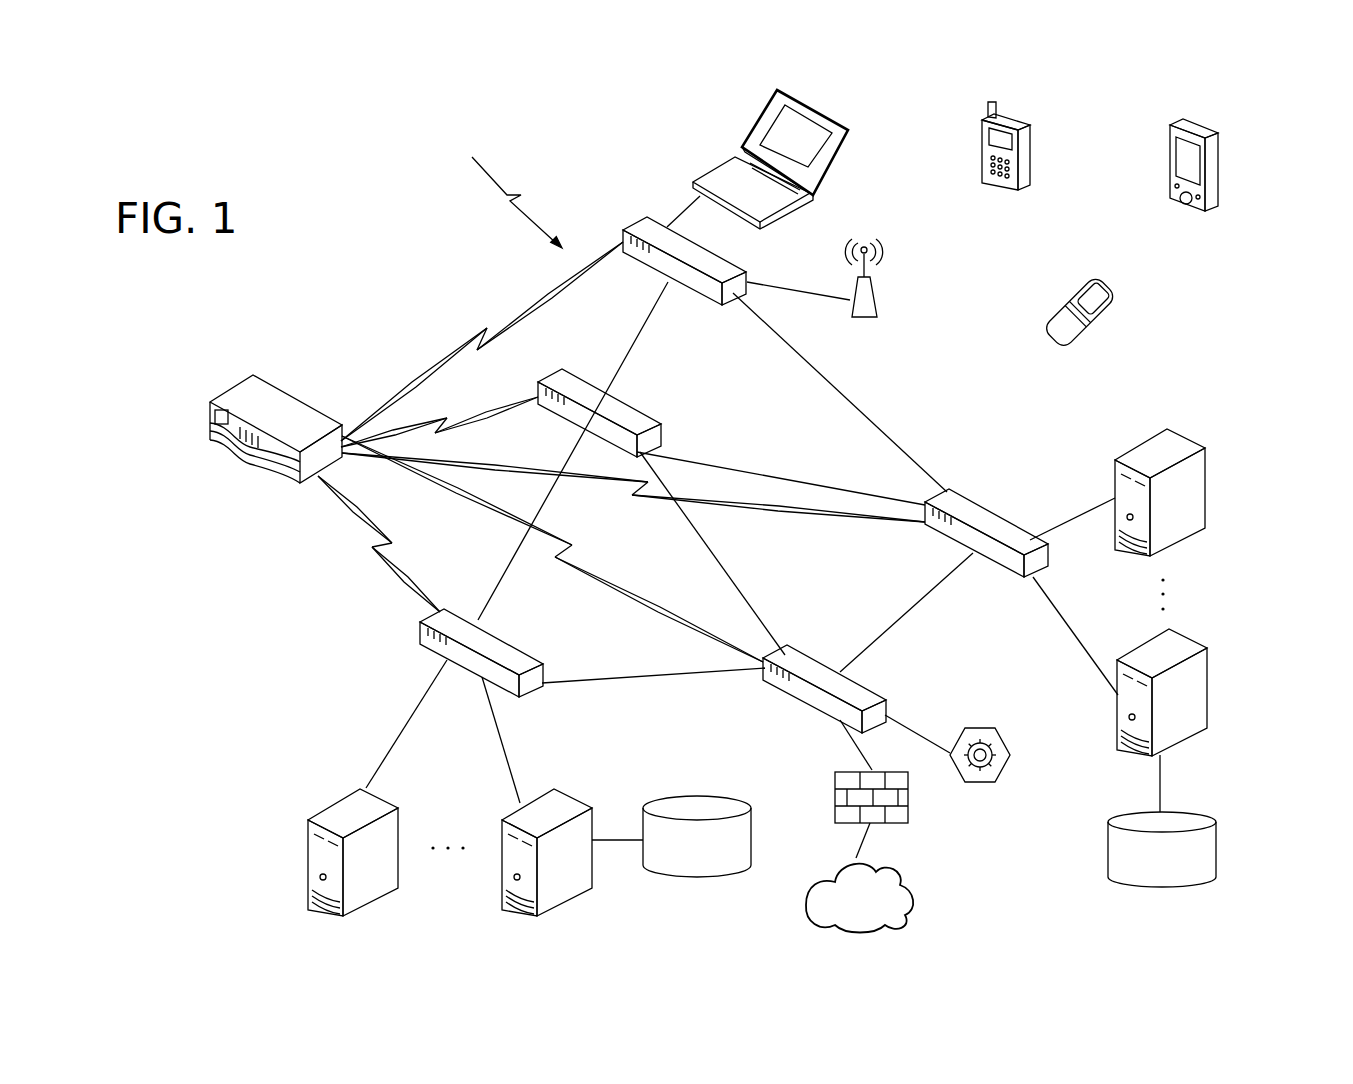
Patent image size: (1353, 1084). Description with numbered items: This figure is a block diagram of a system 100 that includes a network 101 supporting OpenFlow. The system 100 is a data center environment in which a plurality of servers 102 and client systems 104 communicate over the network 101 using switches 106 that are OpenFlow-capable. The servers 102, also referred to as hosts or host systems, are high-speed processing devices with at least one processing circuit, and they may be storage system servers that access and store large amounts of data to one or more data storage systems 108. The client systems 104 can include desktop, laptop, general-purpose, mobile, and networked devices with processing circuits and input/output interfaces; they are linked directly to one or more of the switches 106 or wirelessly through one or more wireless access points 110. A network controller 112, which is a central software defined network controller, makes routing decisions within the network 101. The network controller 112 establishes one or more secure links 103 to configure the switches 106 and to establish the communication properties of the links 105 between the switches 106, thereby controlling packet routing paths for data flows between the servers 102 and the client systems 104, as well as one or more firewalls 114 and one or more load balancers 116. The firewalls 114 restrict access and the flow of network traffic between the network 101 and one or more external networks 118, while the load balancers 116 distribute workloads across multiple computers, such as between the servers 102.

The system 100 is at (345, 128).
The network 101 is at (502, 189).
The servers 102 is at (393, 802).
The secure links 103 is at (477, 333).
The client systems 104 is at (817, 110).
The links 105 is at (653, 308).
The switches 106 is at (740, 262).
The data storage systems 108 is at (720, 863).
The wireless access points 110 is at (877, 289).
The network controller 112 is at (278, 388).
The firewalls 114 is at (833, 778).
The load balancers 116 is at (980, 728).
The external networks 118 is at (883, 911).